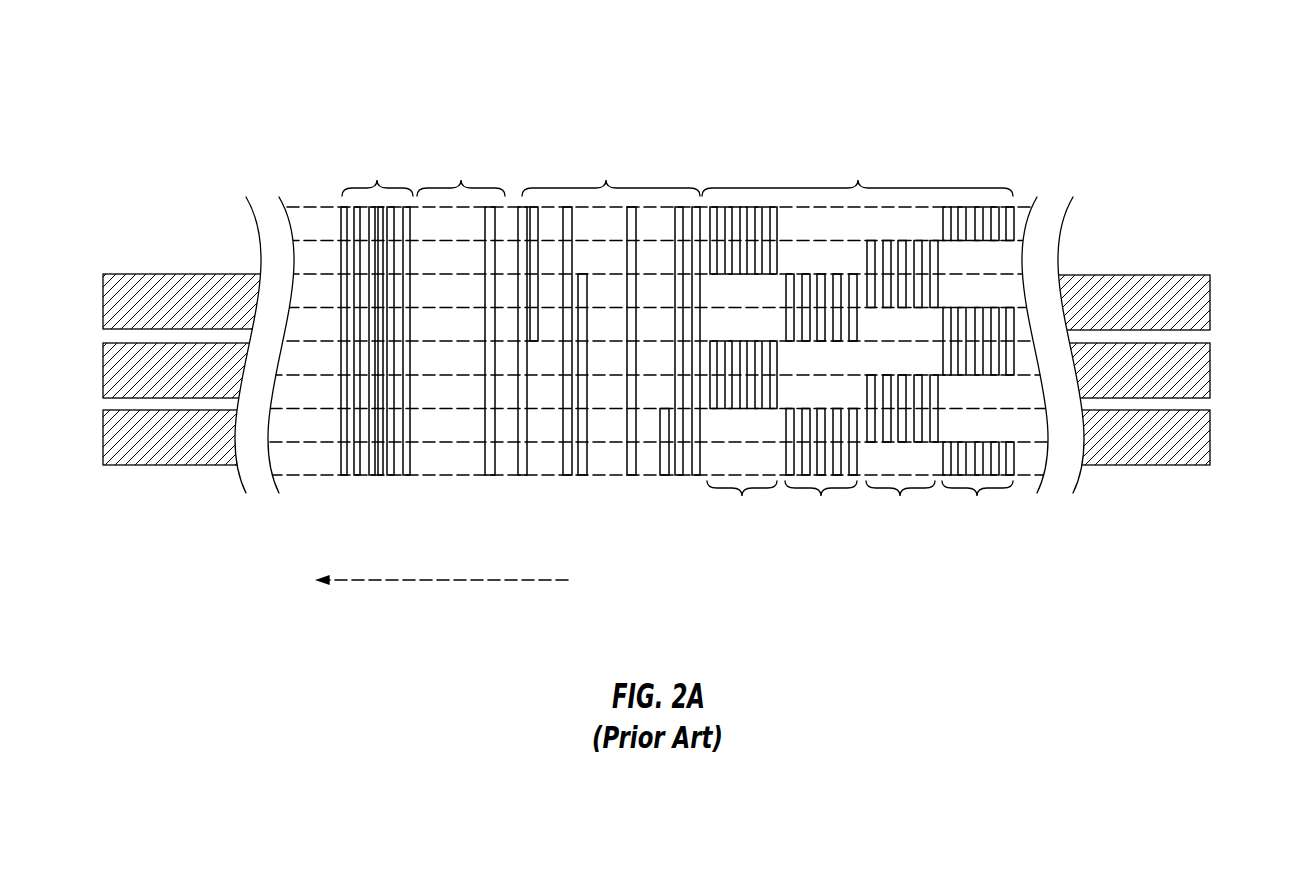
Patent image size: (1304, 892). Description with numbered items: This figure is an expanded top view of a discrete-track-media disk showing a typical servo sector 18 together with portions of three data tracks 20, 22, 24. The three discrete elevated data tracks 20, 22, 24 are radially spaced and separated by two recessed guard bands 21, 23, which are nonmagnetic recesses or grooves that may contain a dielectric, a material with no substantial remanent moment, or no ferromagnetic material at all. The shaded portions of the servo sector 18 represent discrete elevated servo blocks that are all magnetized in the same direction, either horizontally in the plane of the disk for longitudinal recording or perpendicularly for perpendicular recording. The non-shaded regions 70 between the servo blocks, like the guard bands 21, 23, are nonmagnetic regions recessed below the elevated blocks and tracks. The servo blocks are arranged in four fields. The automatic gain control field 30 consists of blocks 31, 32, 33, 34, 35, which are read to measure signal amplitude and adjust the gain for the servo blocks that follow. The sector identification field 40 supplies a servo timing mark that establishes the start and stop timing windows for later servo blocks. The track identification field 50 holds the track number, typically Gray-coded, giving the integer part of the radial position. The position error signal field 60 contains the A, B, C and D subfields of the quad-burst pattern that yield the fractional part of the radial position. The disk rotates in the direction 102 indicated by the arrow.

The servo sector 18 is at (1015, 128).
The data track 20 is at (114, 434).
The guard band 21 is at (108, 405).
The data track 22 is at (114, 366).
The guard band 23 is at (108, 338).
The data track 24 is at (114, 295).
The automatic gain control (AGC) field 30 is at (375, 358).
The AGC block 31 is at (344, 477).
The AGC block 32 is at (357, 477).
The AGC block 33 is at (372, 477).
The AGC block 34 is at (390, 477).
The AGC block 35 is at (407, 477).
The sector identification (SID) field 40 is at (496, 192).
The track identification (TID) field 50 is at (677, 192).
The position error signal (PES) field 60 is at (986, 193).
The nonmagnetic region 70 is at (880, 243).
The direction of disk rotation 102 is at (487, 580).